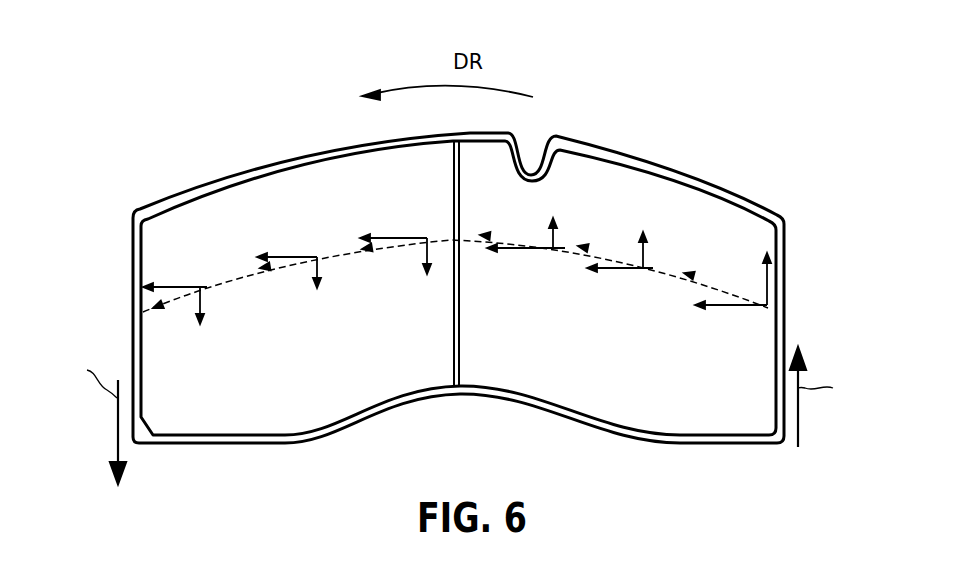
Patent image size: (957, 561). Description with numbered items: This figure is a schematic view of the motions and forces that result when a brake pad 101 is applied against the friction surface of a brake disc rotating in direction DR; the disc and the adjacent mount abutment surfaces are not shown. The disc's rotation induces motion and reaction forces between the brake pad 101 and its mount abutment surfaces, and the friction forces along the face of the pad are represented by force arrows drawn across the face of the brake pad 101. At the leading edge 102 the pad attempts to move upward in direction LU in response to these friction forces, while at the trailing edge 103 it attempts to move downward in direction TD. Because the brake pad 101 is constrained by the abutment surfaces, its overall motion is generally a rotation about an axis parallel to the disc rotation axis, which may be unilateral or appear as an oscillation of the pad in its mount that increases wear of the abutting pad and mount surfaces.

The brake pad 101 is at (165, 200).
The leading edge 102 is at (785, 447).
The trailing edge 103 is at (110, 430).